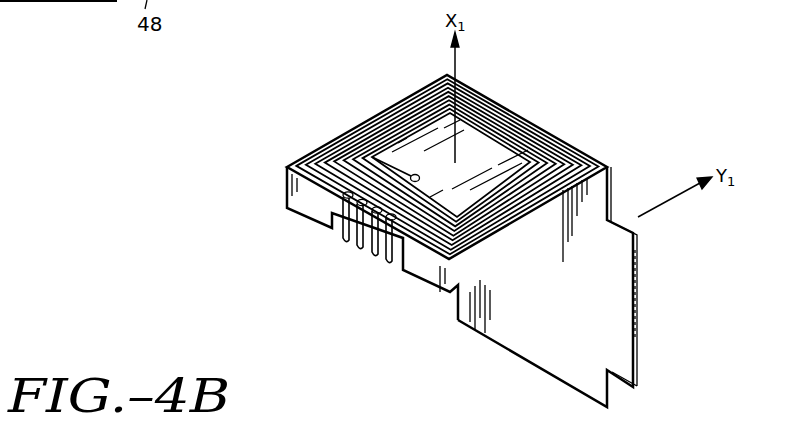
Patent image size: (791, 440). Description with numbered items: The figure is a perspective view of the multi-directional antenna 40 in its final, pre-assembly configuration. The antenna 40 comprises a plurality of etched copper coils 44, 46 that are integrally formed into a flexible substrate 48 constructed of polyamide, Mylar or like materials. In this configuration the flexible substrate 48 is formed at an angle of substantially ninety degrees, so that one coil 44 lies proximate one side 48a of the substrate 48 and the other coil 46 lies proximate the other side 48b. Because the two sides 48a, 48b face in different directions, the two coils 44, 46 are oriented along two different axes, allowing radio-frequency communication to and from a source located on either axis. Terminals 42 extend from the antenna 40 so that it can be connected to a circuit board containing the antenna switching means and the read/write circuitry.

The multi-directional antenna 40 is at (545, 98).
The terminals 42 is at (389, 263).
The etched copper coil 44 is at (400, 110).
The etched copper coil 46 is at (640, 335).
The flexible substrate 48 is at (548, 352).
The first side of substrate 48a is at (337, 142).
The second side of substrate 48b is at (640, 278).